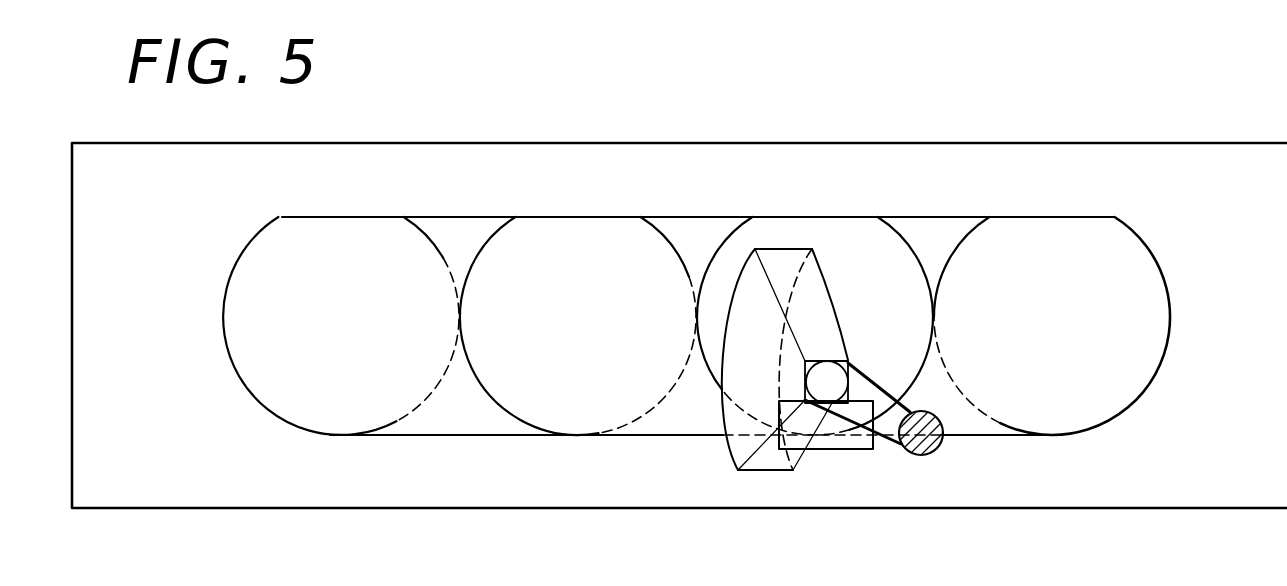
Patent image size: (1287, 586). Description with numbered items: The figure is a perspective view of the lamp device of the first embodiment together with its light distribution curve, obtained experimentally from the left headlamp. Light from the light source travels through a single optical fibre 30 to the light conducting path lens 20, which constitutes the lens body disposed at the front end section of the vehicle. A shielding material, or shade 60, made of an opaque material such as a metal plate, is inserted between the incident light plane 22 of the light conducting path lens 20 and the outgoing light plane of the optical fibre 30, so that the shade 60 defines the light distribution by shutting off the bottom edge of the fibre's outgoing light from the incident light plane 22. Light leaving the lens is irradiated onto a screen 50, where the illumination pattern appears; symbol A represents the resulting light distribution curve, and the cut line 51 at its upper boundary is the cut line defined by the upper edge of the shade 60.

The screen 50 is at (403, 168).
The cut line 51 is at (1043, 217).
The light conducting path lens 20 is at (783, 260).
The incident light plane 22 is at (850, 363).
The optical fibre 30 is at (890, 443).
The shielding material (shade) 60 is at (852, 442).
The light distribution curve A is at (333, 435).